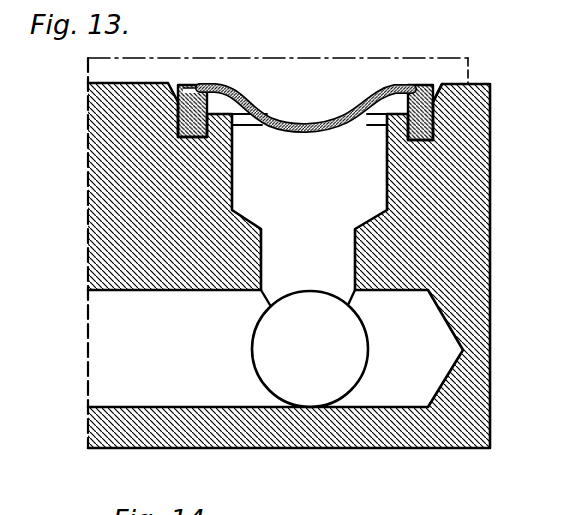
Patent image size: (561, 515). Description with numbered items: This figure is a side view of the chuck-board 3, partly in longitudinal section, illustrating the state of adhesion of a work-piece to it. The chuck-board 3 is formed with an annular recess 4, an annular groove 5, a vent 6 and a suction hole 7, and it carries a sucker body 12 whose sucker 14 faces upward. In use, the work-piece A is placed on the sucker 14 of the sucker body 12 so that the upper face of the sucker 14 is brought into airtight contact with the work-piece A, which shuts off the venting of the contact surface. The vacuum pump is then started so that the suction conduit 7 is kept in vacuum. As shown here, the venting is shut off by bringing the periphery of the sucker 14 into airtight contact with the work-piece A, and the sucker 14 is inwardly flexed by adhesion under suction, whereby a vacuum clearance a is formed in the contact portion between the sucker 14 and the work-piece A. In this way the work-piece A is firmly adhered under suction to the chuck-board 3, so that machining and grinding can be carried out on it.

The chuck-board 3 is at (468, 256).
The annular recess 4 is at (450, 102).
The annular groove 5 is at (432, 118).
The vent 6 is at (275, 270).
The suction hole 7 is at (240, 404).
The sucker body 12 is at (190, 113).
The sucker 14 is at (270, 124).
The work-piece A is at (333, 68).
The vacuum clearance a is at (347, 101).